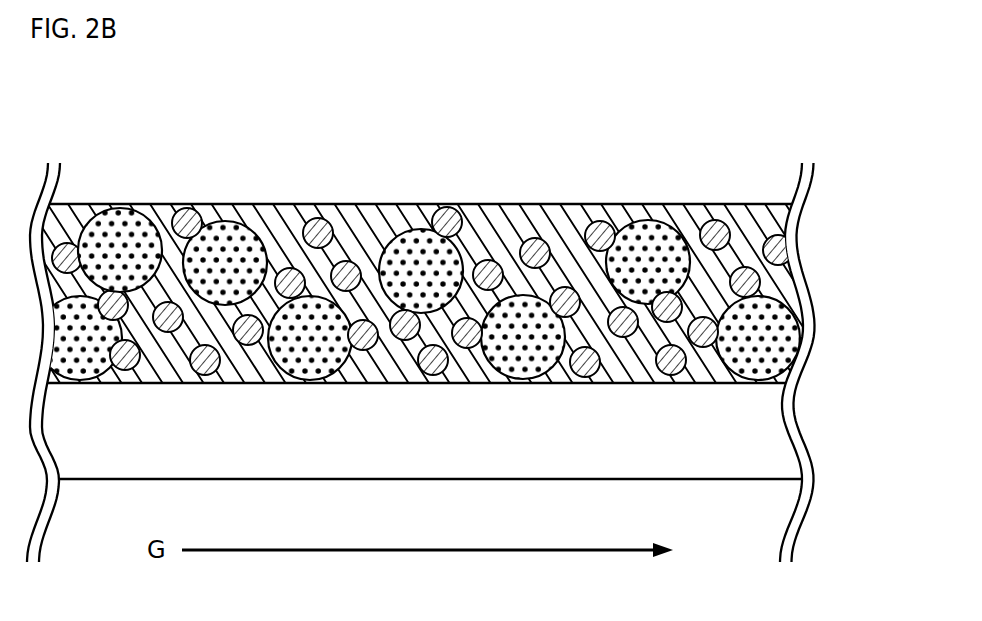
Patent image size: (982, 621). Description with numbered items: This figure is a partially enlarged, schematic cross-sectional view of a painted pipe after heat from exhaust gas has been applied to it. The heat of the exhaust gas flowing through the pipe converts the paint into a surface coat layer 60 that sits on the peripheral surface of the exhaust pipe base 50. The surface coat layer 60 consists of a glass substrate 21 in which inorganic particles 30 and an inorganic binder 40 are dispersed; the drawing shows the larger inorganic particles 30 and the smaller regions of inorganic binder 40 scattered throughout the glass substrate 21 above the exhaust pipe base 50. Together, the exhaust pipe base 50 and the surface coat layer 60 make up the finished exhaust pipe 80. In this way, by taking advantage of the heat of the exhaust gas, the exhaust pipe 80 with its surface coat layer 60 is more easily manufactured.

The glass substrate 21 is at (553, 222).
The inorganic particles 30 is at (118, 226).
The inorganic binder 40 is at (190, 222).
The exhaust pipe base 50 is at (738, 460).
The surface coat layer 60 is at (450, 238).
The exhaust pipe 80 is at (748, 128).